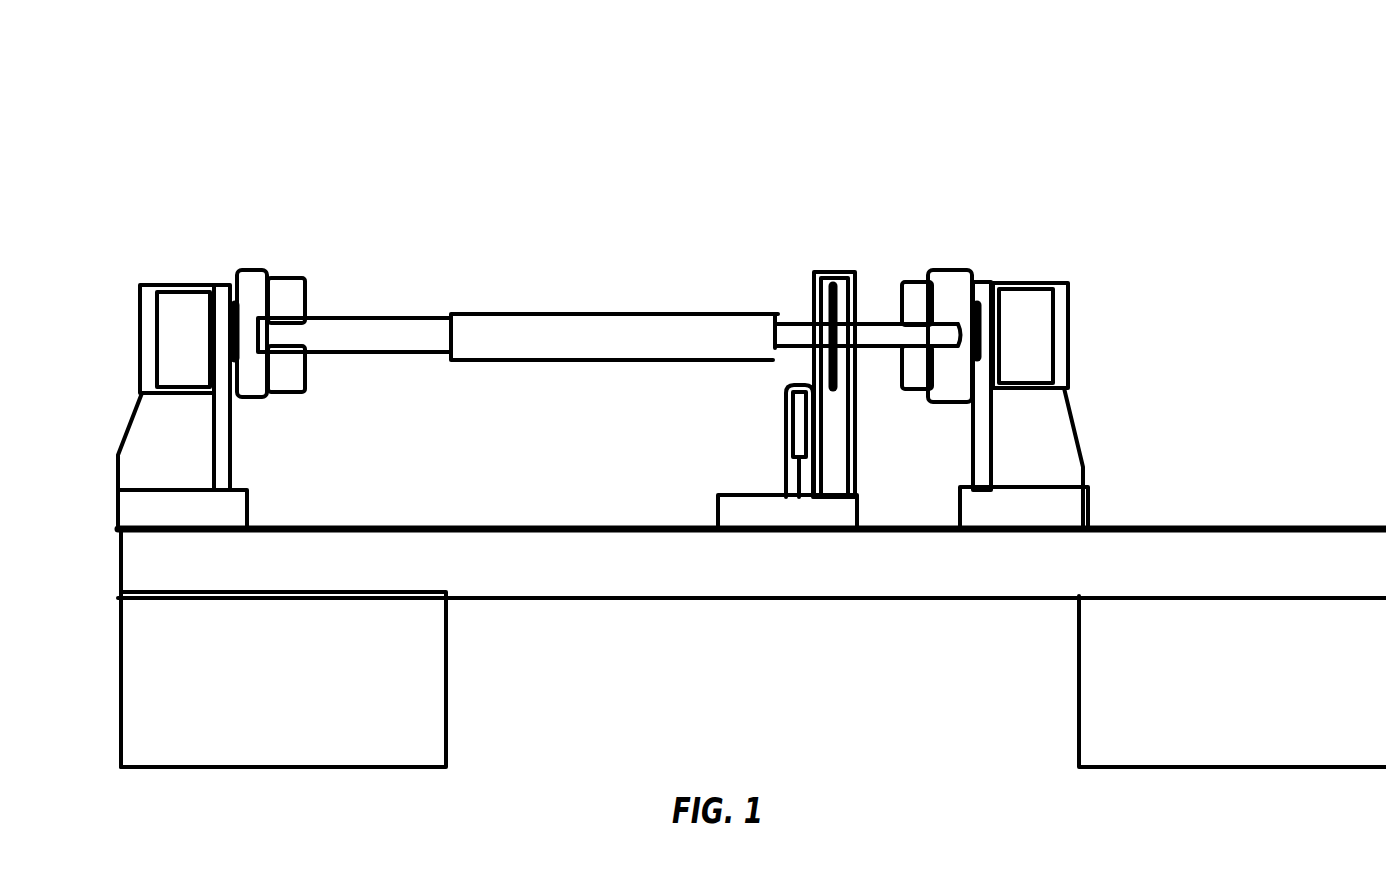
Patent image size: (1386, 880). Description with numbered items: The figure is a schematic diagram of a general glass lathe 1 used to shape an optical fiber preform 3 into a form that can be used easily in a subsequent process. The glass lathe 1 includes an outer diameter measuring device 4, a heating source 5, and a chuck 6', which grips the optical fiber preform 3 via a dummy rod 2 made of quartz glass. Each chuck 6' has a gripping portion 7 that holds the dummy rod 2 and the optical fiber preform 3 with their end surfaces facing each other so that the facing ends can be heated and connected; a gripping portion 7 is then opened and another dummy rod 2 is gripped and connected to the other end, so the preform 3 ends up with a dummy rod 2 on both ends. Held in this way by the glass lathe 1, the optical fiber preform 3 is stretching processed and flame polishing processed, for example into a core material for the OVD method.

The glass lathe 1 is at (185, 270).
The dummy rod 2 is at (405, 325).
The optical fiber preform 3 is at (616, 332).
The outer diameter measuring device 4 is at (813, 273).
The heating source 5 is at (787, 403).
The chuck 6' is at (667, 319).
The gripping portion 7 is at (307, 382).